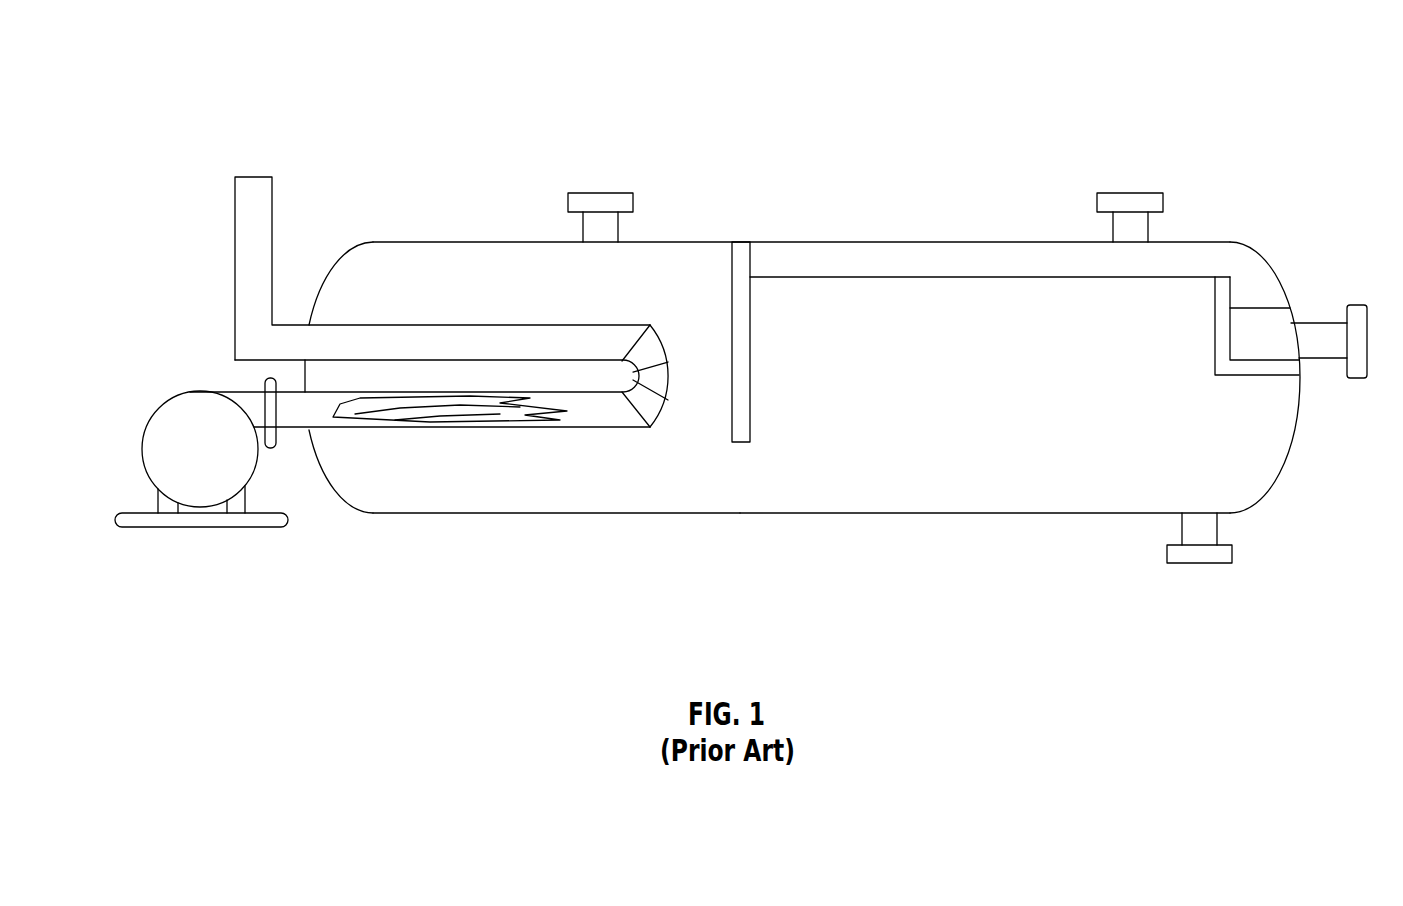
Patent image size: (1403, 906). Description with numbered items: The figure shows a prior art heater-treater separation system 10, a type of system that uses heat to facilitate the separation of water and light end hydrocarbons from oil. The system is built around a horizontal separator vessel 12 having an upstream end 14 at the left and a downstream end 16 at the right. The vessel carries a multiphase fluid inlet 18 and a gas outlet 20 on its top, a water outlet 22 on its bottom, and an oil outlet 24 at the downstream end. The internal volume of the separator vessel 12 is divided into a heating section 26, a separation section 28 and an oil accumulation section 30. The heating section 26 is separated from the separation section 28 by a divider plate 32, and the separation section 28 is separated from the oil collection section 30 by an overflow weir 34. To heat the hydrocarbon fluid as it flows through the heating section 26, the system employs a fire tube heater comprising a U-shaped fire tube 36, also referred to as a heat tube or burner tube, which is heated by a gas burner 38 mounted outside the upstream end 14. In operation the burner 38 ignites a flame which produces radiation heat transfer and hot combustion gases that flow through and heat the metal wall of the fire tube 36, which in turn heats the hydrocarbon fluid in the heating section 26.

The separation system 10 is at (1063, 82).
The horizontal separator vessel 12 is at (876, 243).
The upstream end 14 is at (351, 244).
The downstream end 16 is at (1294, 452).
The multiphase fluid inlet 18 is at (633, 203).
The gas outlet 20 is at (1165, 200).
The water outlet 22 is at (1165, 552).
The oil outlet 24 is at (1356, 379).
The heating section 26 is at (617, 500).
The separation section 28 is at (993, 485).
The oil accumulation section 30 is at (1268, 285).
The divider plate 32 is at (751, 265).
The overflow weir 34 is at (1232, 285).
The U-shaped fire tube 36 is at (447, 418).
The gas burner 38 is at (168, 393).